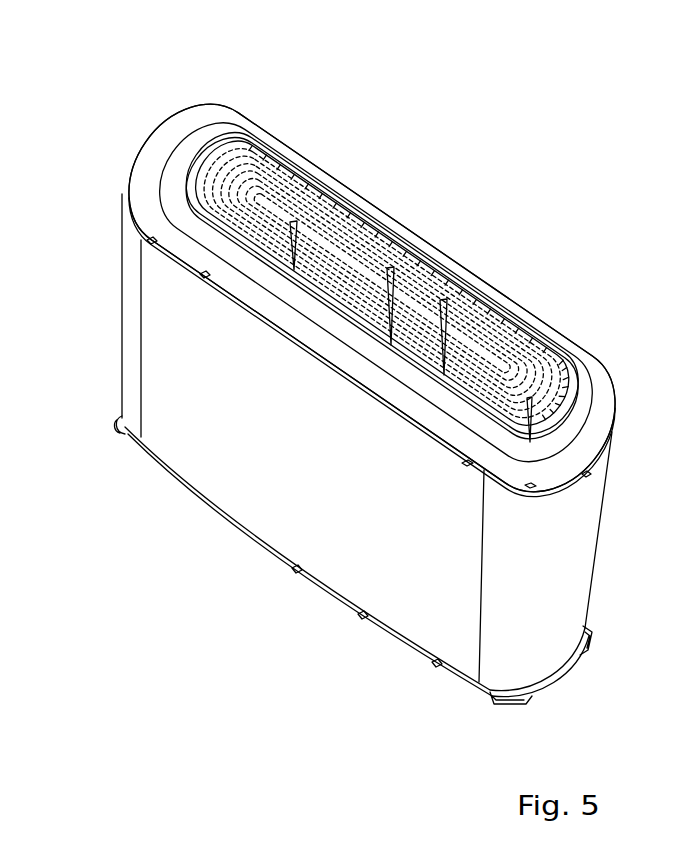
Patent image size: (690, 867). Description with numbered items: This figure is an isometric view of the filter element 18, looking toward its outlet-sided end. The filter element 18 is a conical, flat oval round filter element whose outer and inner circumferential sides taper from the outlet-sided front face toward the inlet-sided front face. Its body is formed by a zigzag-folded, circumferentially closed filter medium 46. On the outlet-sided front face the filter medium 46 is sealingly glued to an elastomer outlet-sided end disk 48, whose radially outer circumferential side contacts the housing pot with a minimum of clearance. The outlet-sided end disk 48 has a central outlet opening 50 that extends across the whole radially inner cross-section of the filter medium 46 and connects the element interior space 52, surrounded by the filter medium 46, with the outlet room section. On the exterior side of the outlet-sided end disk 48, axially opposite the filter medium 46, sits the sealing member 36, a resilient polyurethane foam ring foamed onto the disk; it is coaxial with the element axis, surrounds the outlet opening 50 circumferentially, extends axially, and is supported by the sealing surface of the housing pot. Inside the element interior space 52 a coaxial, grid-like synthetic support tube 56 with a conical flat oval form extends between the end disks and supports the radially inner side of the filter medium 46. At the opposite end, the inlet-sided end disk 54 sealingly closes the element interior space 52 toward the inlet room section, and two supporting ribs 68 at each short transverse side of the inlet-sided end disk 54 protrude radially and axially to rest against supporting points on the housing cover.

The filter element 18 is at (449, 162).
The sealing member 36 is at (205, 130).
The filter medium 46 is at (572, 567).
The outlet-sided end disk 48 is at (128, 162).
The outlet opening 50 is at (300, 168).
The element interior space 52 is at (364, 306).
The inlet-sided end disk 54 is at (383, 637).
The support tube 56 is at (477, 341).
The supporting ribs 68 is at (122, 430).